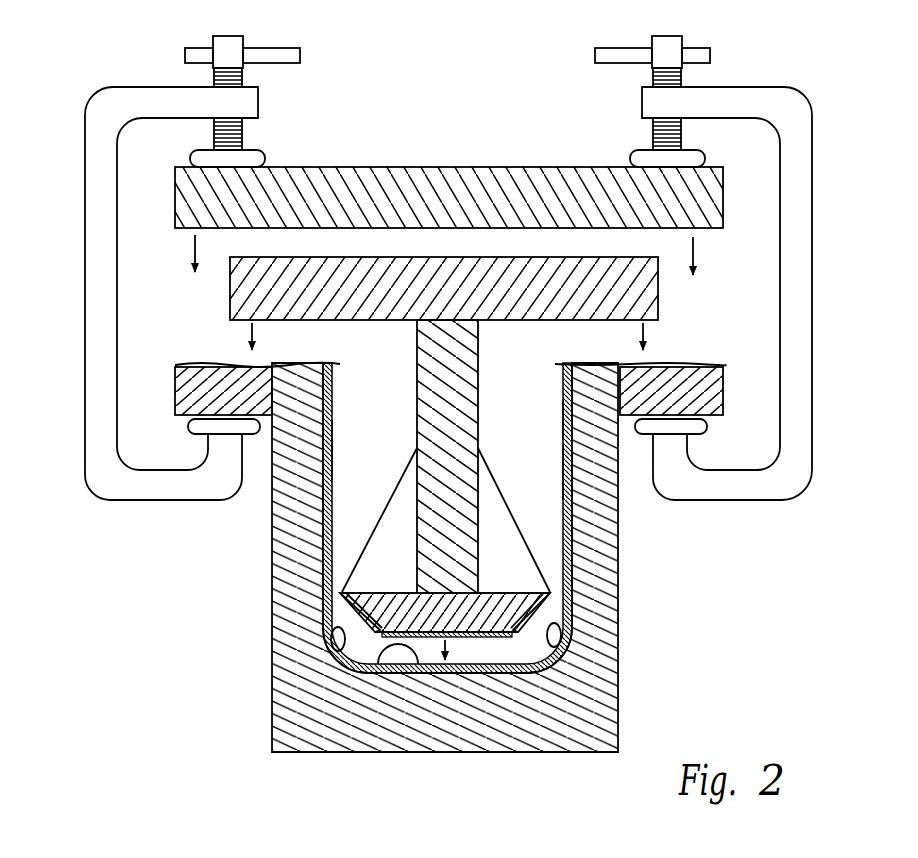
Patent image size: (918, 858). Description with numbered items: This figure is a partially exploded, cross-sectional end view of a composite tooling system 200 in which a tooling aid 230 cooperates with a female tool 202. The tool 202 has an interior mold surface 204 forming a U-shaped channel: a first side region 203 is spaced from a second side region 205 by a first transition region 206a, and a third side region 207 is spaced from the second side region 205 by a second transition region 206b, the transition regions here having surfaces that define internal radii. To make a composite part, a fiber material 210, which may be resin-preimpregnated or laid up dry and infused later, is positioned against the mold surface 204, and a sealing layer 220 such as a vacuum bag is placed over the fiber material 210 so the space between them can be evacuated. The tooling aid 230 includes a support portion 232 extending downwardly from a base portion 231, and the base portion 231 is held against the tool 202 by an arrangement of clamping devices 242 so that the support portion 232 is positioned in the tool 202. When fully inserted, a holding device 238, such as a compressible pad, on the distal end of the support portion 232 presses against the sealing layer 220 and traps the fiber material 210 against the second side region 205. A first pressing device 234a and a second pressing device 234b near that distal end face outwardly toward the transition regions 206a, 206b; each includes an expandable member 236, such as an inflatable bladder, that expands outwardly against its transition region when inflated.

The composite tooling system 200 is at (50, 157).
The clamping devices 242 is at (130, 87).
The tooling aid 230 is at (451, 528).
The base portion 231 is at (230, 297).
The support portion 232 is at (417, 547).
The expandable member 236 is at (445, 679).
The holding device 238 is at (473, 637).
The first pressing device 234a is at (552, 608).
The second pressing device 234b is at (340, 600).
The female tool 202 is at (597, 705).
The first side region 203 is at (560, 385).
The interior mold surface 204 is at (563, 372).
The sealing layer 220 is at (560, 425).
The fiber material 210 is at (563, 462).
The third side region 207 is at (332, 440).
The first transition region 206a is at (565, 622).
The second transition region 206b is at (330, 632).
The second side region 205 is at (372, 663).